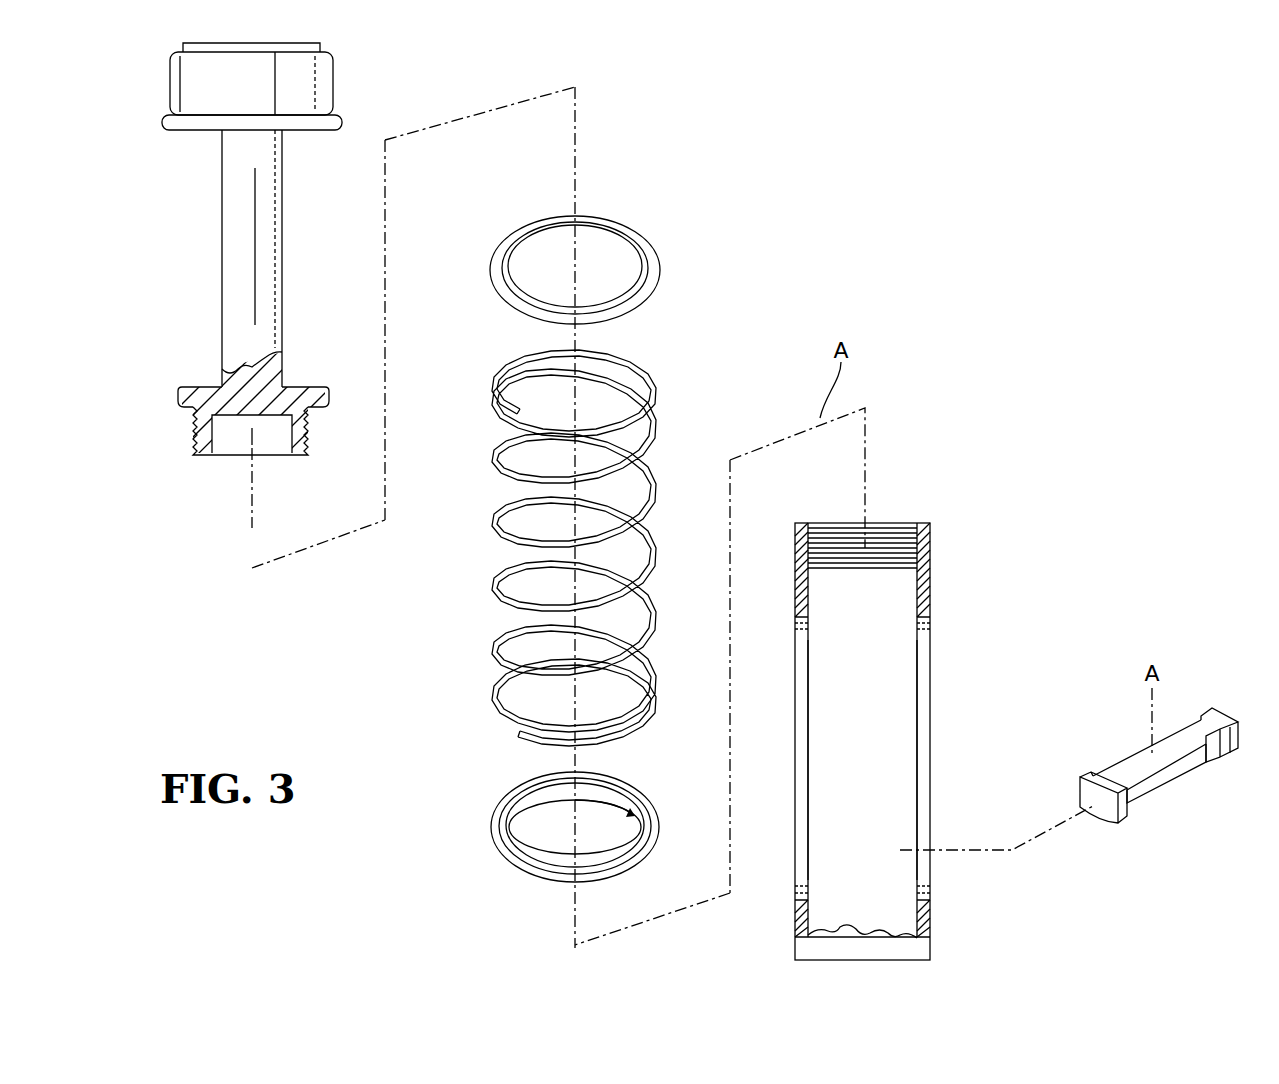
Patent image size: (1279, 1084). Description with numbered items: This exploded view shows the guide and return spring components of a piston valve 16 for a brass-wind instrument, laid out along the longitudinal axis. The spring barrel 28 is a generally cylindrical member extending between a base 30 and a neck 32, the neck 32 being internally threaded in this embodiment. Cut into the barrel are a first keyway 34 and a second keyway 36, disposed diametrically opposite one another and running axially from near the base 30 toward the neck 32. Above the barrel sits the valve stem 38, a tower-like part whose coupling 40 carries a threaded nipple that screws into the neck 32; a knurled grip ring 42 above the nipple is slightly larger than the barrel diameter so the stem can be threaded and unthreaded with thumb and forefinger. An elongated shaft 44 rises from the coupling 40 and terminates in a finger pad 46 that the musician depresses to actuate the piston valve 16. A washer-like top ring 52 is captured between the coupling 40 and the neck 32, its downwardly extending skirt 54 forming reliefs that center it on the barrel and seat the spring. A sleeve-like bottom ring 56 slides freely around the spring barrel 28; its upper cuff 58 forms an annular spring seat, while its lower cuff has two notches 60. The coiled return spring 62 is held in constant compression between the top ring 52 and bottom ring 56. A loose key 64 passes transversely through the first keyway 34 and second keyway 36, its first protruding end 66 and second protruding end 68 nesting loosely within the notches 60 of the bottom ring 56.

The piston valve 16 is at (900, 178).
The spring barrel 28 is at (940, 600).
The base 30 is at (930, 958).
The neck 32 is at (810, 547).
The first keyway 34 is at (808, 697).
The second keyway 36 is at (917, 755).
The valve stem 38 is at (212, 300).
The coupling 40 is at (193, 430).
The grip ring 42 is at (183, 397).
The elongated shaft 44 is at (222, 212).
The finger pad 46 is at (190, 84).
The top ring 52 is at (668, 262).
The skirt 54 is at (555, 243).
The bottom ring 56 is at (486, 800).
The upper cuff 58 is at (528, 850).
The notches 60 is at (627, 813).
The return spring 62 is at (484, 574).
The loose key 64 is at (1167, 803).
The first protruding end 66 is at (1108, 812).
The second protruding end 68 is at (1222, 712).